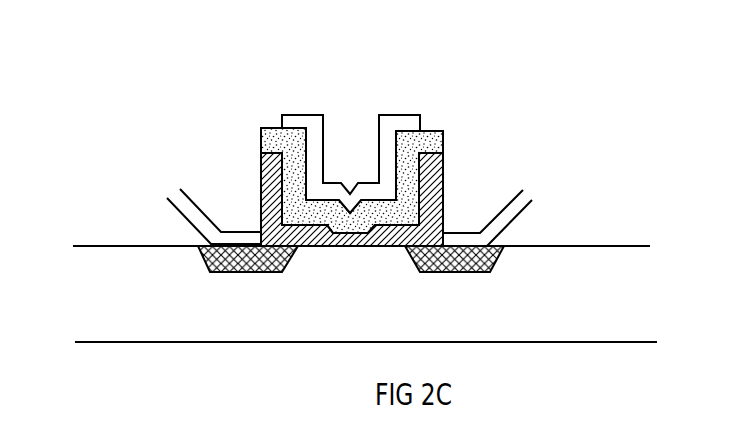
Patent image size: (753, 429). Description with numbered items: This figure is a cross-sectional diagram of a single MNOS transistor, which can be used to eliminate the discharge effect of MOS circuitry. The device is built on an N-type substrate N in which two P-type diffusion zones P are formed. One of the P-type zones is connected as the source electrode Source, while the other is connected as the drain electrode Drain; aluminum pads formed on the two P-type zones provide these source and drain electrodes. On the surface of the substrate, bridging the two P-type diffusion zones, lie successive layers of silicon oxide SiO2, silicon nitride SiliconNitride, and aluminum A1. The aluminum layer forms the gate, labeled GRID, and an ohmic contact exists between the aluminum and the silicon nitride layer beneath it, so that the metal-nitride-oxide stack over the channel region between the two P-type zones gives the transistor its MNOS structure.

The grid GRID is at (319, 57).
The aluminum layer A1 is at (391, 113).
The silicon nitride layer SiliconNitride is at (443, 138).
The silicon oxide layer SiO2 is at (443, 187).
The source electrode Source is at (184, 203).
The drain electrode Drain is at (519, 203).
The P-type diffusion zone P is at (351, 275).
The N-type substrate N is at (365, 294).